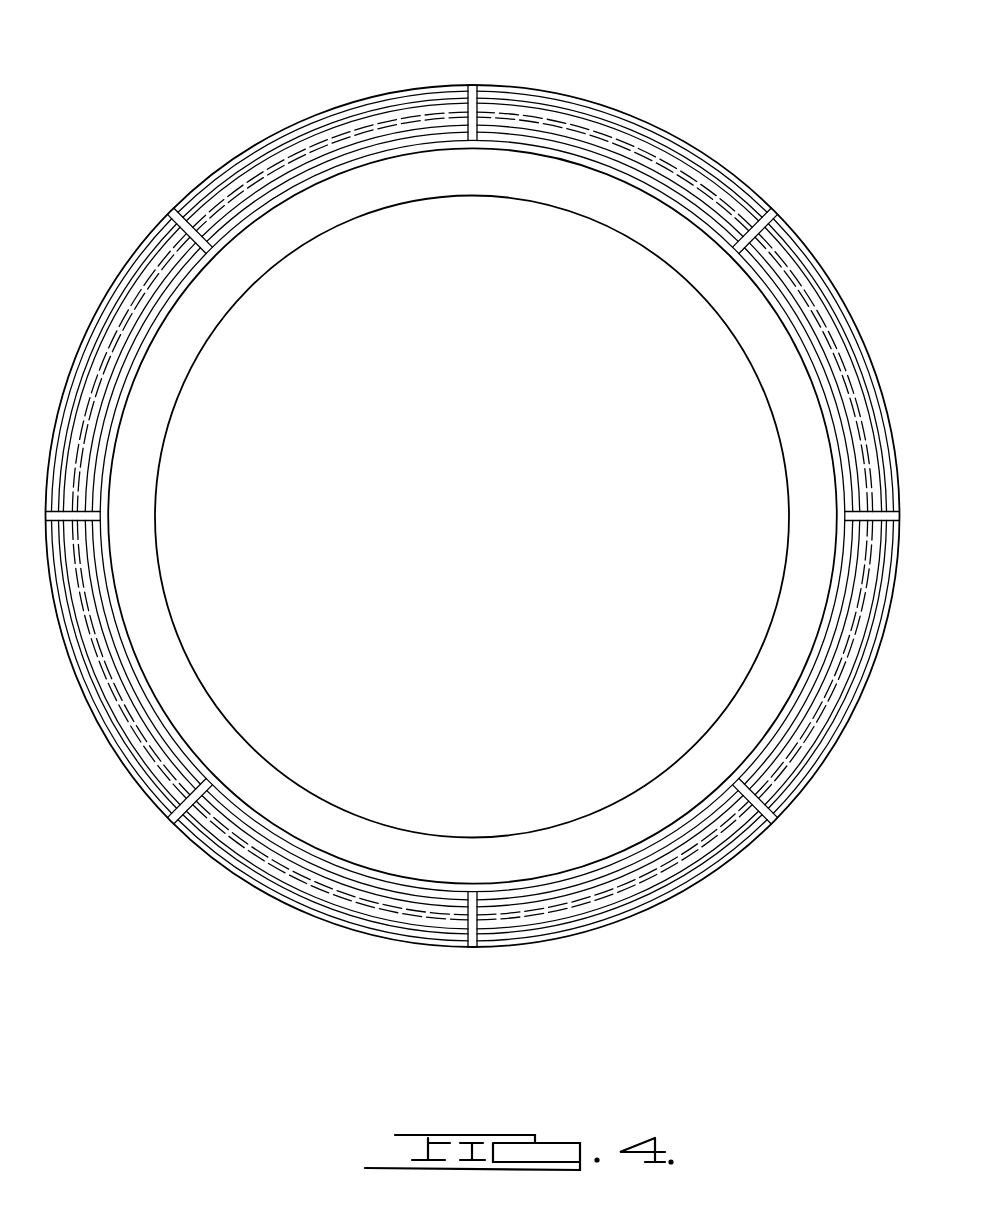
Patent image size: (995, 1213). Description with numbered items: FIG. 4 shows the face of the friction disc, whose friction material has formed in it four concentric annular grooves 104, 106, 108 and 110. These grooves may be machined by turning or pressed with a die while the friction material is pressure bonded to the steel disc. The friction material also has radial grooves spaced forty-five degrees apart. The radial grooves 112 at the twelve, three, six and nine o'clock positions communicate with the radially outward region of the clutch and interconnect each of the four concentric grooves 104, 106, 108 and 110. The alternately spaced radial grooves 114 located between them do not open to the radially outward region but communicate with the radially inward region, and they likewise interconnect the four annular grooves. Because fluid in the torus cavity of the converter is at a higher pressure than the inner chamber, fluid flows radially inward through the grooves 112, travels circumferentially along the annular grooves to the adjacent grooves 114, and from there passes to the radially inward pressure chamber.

The concentric annular groove 104 is at (573, 932).
The concentric annular groove 106 is at (637, 897).
The concentric annular groove 108 is at (683, 855).
The concentric annular groove 110 is at (707, 820).
The radial grooves communicating with the radially outward region 112 is at (480, 97).
The radial grooves communicating with the radially inward region 114 is at (177, 223).